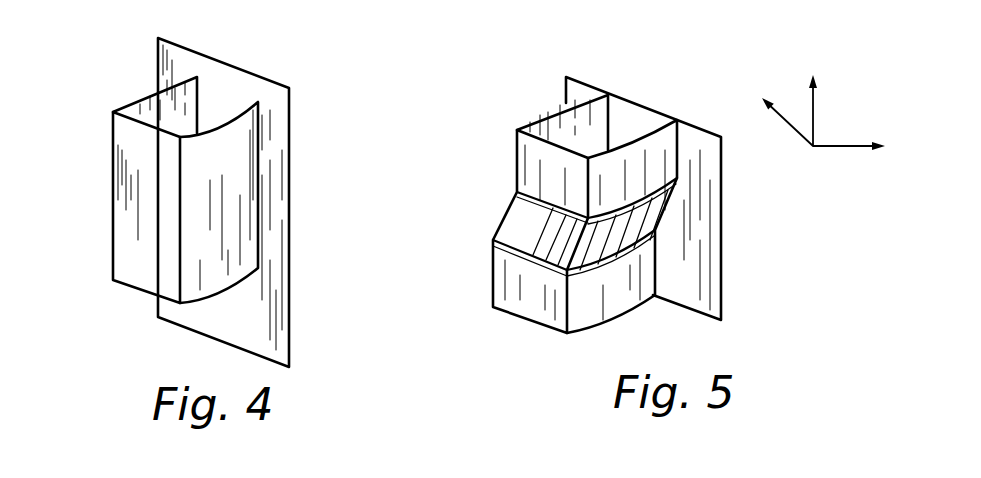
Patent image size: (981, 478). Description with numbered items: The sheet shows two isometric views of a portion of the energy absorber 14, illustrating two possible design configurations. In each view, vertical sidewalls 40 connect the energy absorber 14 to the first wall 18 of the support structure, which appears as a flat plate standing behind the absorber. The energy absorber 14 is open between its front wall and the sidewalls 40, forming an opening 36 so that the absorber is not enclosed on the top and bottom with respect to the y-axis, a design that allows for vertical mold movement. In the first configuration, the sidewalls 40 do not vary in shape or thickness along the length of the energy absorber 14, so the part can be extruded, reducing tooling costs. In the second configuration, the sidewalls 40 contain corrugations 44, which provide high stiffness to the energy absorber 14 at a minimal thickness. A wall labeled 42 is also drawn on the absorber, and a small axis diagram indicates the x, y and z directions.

In FIG. 4, the energy absorber 14 is at (302, 54).
In FIG. 5, the energy absorber 14 is at (515, 81).
In FIG. 4, the first wall 18 is at (273, 119).
In FIG. 5, the first wall 18 is at (701, 161).
In FIG. 4, the opening 36 is at (160, 108).
In FIG. 5, the opening 36 is at (624, 120).
In FIG. 4, the vertical sidewalls 40 is at (118, 113).
In FIG. 5, the vertical sidewalls 40 is at (613, 305).
In FIG. 4, the front flange wall 42 is at (147, 250).
In FIG. 5, the front flange wall 42 is at (520, 221).
In FIG. 5, the corrugations 44 is at (612, 255).